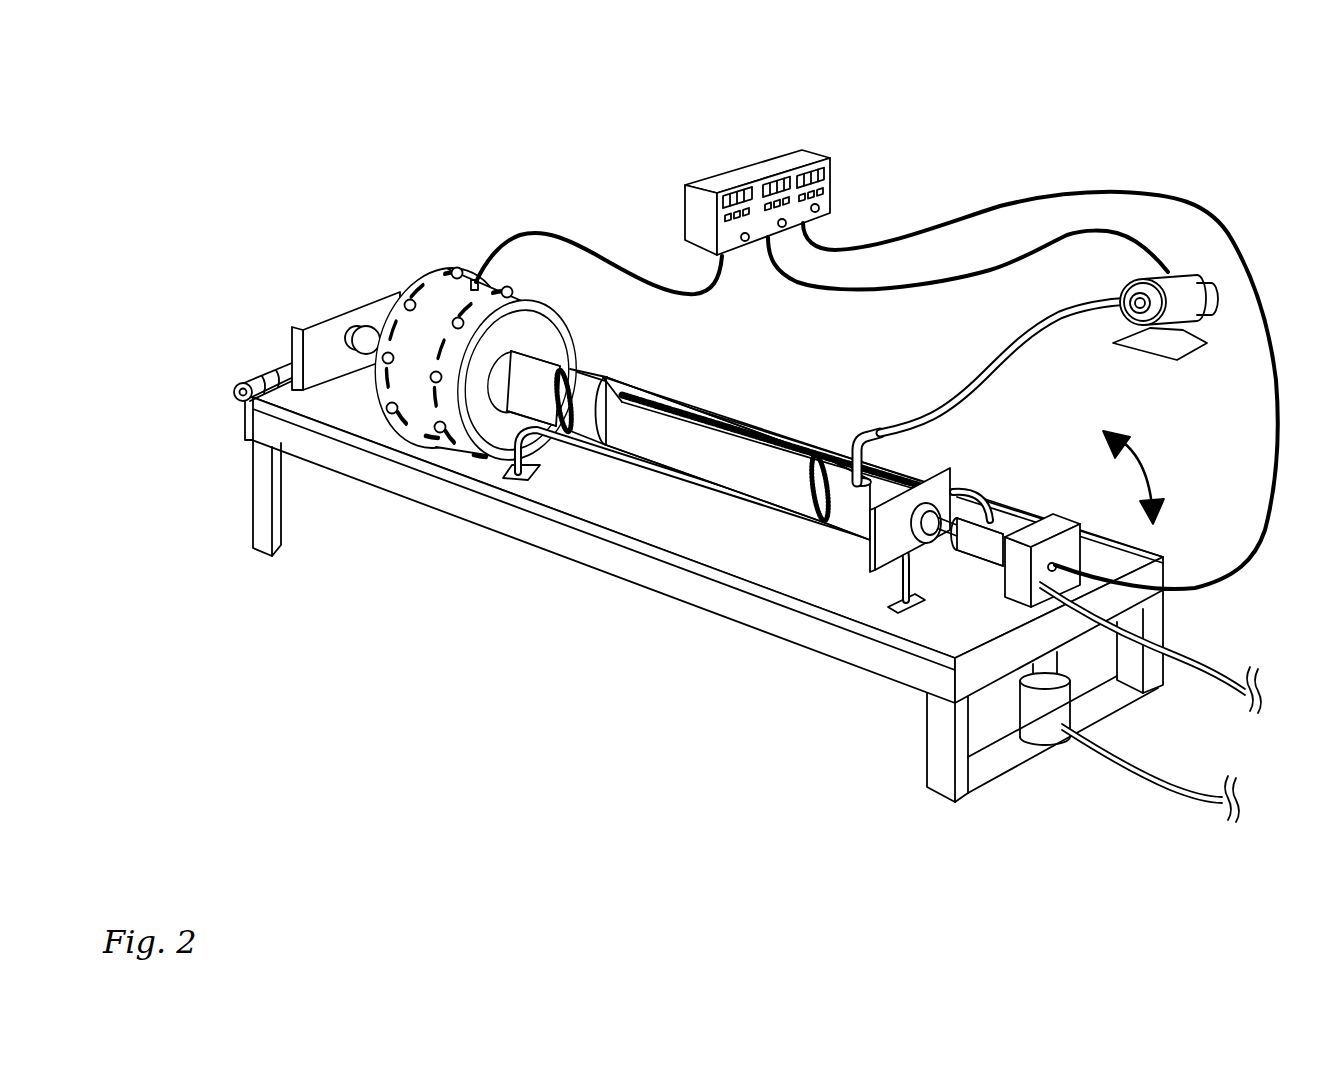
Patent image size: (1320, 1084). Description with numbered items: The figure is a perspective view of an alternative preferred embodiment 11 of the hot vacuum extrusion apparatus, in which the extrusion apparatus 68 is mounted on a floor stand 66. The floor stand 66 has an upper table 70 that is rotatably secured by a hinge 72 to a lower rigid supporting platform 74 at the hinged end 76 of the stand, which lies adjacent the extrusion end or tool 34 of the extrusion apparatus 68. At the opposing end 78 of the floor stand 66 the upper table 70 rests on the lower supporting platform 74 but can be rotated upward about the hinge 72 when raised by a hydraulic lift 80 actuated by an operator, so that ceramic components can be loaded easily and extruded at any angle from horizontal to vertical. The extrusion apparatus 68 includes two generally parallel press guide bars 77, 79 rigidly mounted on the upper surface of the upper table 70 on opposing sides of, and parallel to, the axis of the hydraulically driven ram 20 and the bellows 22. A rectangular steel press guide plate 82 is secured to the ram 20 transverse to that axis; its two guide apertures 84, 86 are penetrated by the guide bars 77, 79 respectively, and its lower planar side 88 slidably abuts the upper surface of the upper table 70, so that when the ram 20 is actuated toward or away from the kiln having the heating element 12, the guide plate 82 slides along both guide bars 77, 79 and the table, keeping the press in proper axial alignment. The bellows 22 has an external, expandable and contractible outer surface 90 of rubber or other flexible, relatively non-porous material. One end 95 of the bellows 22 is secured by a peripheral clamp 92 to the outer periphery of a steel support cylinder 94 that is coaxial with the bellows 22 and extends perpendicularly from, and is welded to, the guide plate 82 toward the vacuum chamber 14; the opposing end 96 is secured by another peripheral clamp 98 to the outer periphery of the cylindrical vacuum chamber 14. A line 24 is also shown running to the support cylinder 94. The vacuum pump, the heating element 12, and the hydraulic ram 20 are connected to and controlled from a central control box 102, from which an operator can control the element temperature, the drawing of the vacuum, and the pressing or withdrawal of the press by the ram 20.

The alternative preferred embodiment 11 is at (402, 222).
The heating element 12 is at (473, 280).
The vacuum chamber 14 is at (527, 390).
The ram 20 is at (988, 548).
The bellows 22 is at (600, 508).
The fluid supply line 24 is at (881, 427).
The extrusion end or tool 34 is at (367, 340).
The floor stand 66 is at (667, 582).
The extrusion apparatus 68 is at (640, 447).
The upper table 70 is at (343, 408).
The hinge 72 is at (255, 385).
The lower rigid supporting platform 74 is at (305, 450).
The hinged end 76 is at (245, 410).
The press guide bar 77 is at (603, 453).
The opposing end 78 is at (970, 678).
The press guide bar 79 is at (740, 427).
The hydraulic lift 80 is at (1038, 717).
The press guide plate 82 is at (866, 572).
The guide aperture 84 is at (882, 545).
The guide aperture 86 is at (957, 497).
The lower planar side 88 is at (905, 545).
The outer surface 90 is at (748, 472).
The peripheral clamp 92 is at (827, 463).
The steel support cylinder 94 is at (845, 508).
The end of the bellows 95 is at (795, 500).
The opposing end of the bellows 96 is at (596, 403).
The peripheral clamp 98 is at (562, 395).
The central control box 102 is at (747, 172).